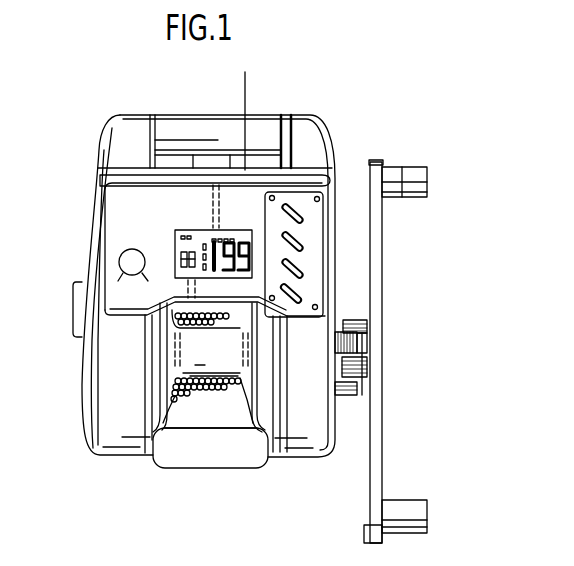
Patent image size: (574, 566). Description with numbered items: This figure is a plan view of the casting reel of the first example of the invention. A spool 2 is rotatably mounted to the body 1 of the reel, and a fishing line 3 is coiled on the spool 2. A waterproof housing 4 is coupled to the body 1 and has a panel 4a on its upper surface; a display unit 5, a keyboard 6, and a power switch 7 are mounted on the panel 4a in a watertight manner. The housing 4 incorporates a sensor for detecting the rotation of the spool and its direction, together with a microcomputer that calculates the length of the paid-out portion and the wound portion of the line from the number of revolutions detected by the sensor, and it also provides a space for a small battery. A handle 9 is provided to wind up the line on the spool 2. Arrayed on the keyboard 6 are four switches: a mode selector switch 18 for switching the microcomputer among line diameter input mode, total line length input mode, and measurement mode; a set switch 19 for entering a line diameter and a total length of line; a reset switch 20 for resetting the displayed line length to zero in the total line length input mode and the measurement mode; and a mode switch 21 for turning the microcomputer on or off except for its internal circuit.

The body 1 is at (85, 397).
The spool 2 is at (168, 340).
The fishing line 3 is at (246, 93).
The waterproof housing 4 is at (96, 231).
The panel 4a is at (115, 205).
The display unit 5 is at (185, 230).
The keyboard 6 is at (313, 260).
The power switch 7 is at (136, 251).
The handle 9 is at (376, 160).
The mode selector switch 18 is at (302, 211).
The set switch 19 is at (302, 240).
The reset switch 20 is at (303, 268).
The mode switch 21 is at (300, 292).